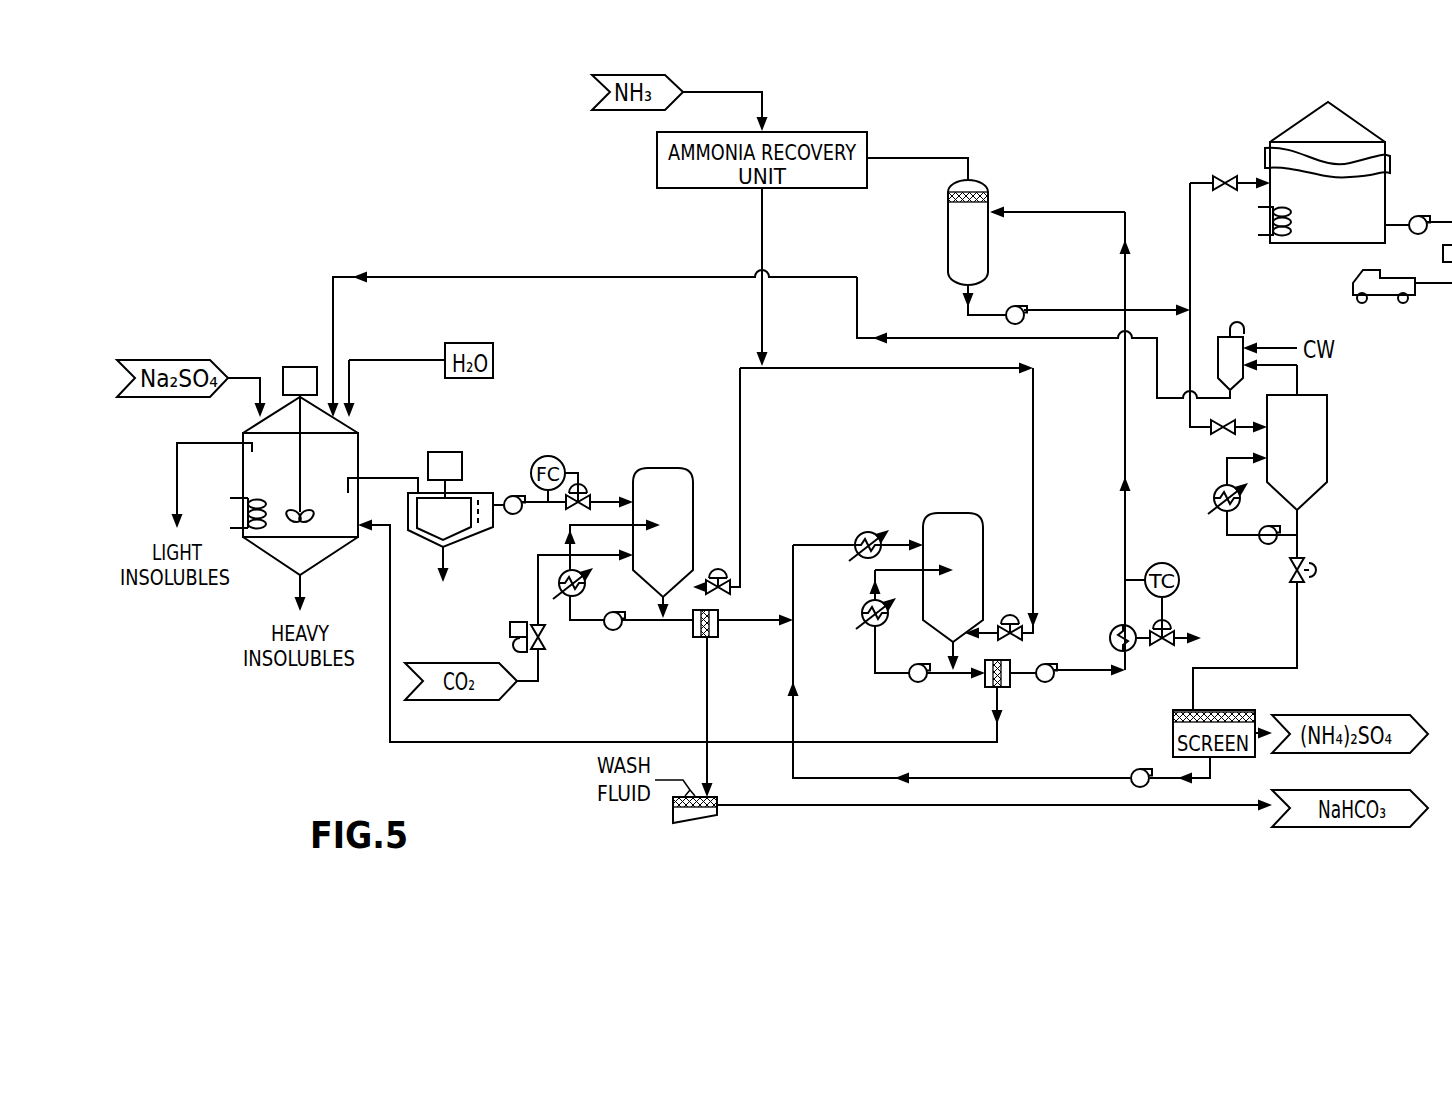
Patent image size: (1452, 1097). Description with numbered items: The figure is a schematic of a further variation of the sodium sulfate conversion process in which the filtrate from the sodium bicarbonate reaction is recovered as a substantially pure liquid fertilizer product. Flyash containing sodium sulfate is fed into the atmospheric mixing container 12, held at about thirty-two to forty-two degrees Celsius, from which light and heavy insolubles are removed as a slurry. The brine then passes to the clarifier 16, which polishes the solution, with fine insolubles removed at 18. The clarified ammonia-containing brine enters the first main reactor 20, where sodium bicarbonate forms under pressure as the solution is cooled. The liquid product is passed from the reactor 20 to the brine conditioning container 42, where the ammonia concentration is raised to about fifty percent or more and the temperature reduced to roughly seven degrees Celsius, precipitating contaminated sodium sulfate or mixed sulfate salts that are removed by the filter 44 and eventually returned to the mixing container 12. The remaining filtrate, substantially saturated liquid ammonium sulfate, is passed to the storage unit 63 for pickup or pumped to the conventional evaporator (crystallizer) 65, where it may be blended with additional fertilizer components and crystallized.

The atmospheric mixing container 12 is at (276, 412).
The clarifier 16 is at (470, 497).
The fine insolubles outlet 18 is at (456, 550).
The first main reactor 20 is at (663, 469).
The brine conditioning container 42 is at (963, 512).
The filter 44 is at (1010, 688).
The storage unit 63 is at (1384, 158).
The evaporator (crystallizer) 65 is at (1296, 484).